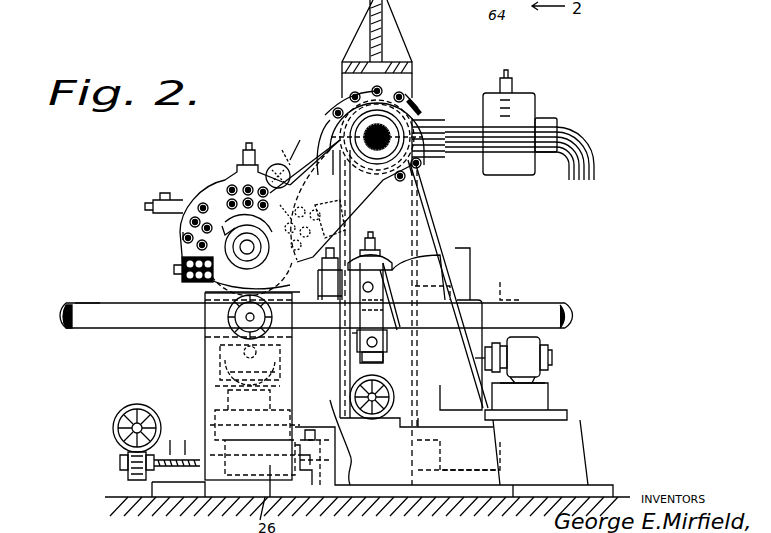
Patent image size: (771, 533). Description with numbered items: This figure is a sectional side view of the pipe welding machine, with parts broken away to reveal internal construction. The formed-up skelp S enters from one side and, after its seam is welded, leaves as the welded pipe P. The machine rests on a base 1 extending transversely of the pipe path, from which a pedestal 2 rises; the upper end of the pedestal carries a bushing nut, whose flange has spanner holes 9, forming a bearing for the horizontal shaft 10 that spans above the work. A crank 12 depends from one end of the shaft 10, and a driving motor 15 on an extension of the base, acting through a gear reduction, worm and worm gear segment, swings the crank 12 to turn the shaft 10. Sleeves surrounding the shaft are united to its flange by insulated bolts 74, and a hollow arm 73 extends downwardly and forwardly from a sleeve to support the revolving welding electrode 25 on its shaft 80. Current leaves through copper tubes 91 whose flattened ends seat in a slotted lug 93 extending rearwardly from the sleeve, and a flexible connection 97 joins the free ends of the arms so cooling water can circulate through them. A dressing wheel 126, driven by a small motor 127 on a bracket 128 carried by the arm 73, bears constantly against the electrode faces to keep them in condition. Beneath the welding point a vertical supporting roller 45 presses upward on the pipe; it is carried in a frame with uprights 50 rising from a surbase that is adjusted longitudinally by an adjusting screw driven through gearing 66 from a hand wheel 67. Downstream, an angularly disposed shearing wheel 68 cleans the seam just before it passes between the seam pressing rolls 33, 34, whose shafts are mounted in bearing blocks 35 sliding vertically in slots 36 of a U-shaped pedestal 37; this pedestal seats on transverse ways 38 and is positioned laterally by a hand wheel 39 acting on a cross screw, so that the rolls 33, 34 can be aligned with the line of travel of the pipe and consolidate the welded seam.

The base 1 is at (205, 440).
The pedestal 2 is at (438, 226).
The spanner holes 9 is at (422, 103).
The shaft 10 is at (380, 125).
The crank 12 is at (437, 212).
The driving motor 15 is at (513, 360).
The welding electrode 25 is at (200, 292).
The seam pressing roll 33 is at (410, 298).
The seam pressing roll 34 is at (380, 344).
The bearing blocks 35 is at (385, 356).
The slots 36 is at (360, 356).
The U-shaped pedestal 37 is at (398, 355).
The ways 38 is at (395, 398).
The hand wheel 39 is at (493, 432).
The vertical supporting roller 45 is at (220, 372).
The uprights 50 is at (215, 388).
The gearing 66 is at (125, 470).
The hand wheel 67 is at (115, 423).
The shearing wheel 68 is at (318, 280).
The arm 73 is at (306, 202).
The bolts 74 is at (330, 112).
The shaft 80 is at (218, 185).
The copper tubes 91 is at (475, 152).
The lug 93 is at (432, 118).
The connection 97 is at (174, 270).
The dressing wheel 126 is at (272, 165).
The small motor 127 is at (275, 170).
The bracket 128 is at (295, 165).
The welded pipe P is at (528, 303).
The formed-up skelp S is at (87, 303).